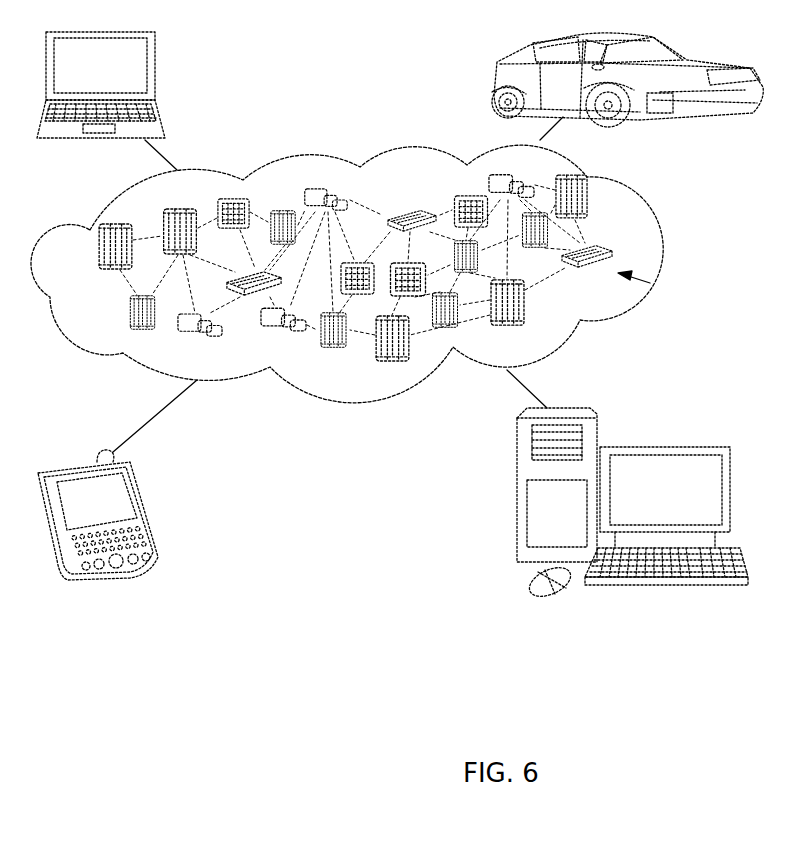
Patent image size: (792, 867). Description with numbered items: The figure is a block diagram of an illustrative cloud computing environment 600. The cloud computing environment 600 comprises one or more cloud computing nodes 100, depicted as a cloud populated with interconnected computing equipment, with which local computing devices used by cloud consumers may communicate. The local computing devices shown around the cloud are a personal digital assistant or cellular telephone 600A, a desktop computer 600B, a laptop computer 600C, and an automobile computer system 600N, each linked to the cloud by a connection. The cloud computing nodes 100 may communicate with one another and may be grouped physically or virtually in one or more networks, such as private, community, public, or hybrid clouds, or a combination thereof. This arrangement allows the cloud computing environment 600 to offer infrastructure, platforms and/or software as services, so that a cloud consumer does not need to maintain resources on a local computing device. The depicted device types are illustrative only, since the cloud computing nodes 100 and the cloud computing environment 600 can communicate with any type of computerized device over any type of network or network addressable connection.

The cloud computing environment 600 is at (663, 252).
The cloud computing nodes 100 is at (643, 287).
The personal digital assistant (PDA) or cellular telephone 600A is at (147, 507).
The desktop computer 600B is at (663, 445).
The laptop computer 600C is at (158, 72).
The automobile computer system 600N is at (490, 80).